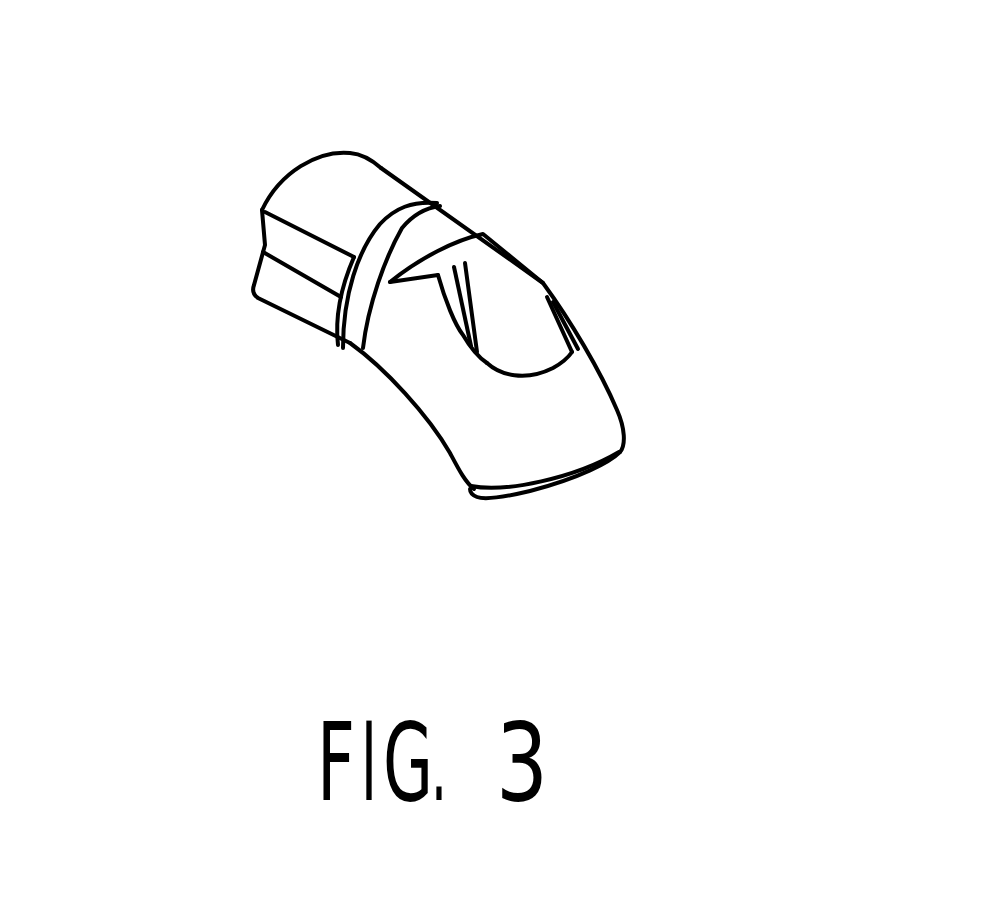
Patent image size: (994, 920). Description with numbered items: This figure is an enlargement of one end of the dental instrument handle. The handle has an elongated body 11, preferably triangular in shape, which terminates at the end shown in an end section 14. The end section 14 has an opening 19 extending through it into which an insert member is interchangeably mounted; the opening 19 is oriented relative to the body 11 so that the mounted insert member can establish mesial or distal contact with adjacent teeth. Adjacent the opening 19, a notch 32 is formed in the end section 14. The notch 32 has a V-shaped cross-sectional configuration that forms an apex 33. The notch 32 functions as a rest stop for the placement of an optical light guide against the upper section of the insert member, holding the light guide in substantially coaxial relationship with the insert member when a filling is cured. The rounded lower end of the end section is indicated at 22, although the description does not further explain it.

The elongated body 11 is at (333, 205).
The end section 14 is at (590, 428).
The opening 19 is at (543, 281).
The rounded end 22 is at (478, 528).
The notch 32 is at (440, 197).
The apex 33 is at (345, 343).